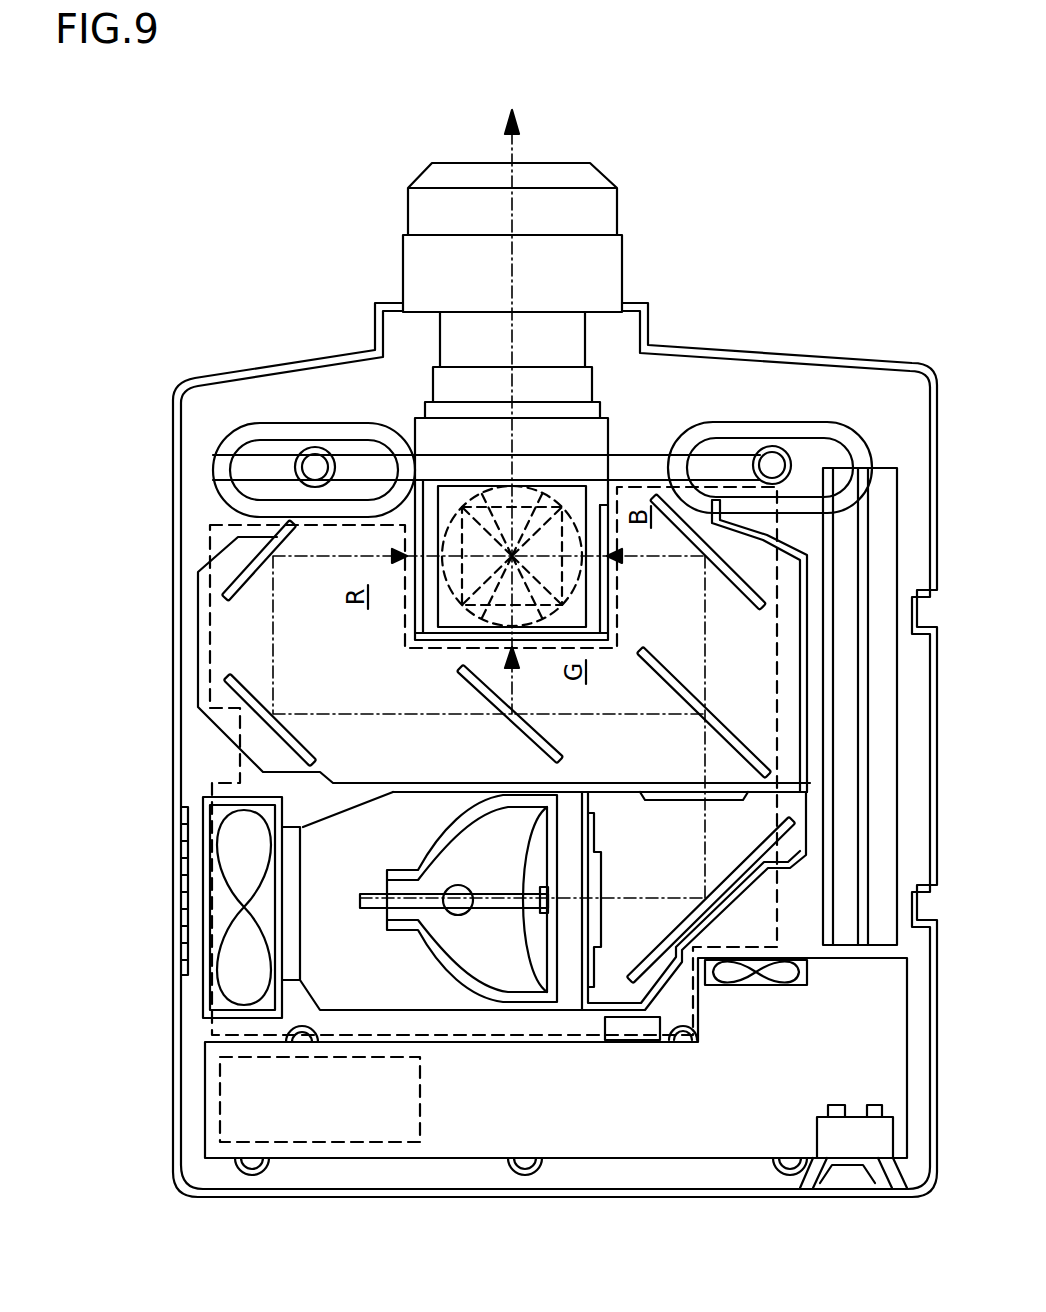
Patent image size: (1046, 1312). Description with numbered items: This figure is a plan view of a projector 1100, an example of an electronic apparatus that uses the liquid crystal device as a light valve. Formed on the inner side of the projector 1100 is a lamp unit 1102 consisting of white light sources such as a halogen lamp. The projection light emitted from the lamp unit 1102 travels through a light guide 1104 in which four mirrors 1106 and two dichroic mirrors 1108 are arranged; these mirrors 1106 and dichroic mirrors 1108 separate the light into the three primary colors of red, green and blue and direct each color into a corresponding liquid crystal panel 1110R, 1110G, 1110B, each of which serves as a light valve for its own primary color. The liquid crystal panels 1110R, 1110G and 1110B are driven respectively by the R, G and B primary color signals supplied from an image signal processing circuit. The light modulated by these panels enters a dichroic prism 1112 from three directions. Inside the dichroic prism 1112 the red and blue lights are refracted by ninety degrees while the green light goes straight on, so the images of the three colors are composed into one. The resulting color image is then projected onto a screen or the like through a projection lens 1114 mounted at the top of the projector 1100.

The projector 1100 is at (180, 358).
The lamp unit 1102 is at (340, 847).
The light guide 1104 is at (192, 698).
The mirror 1106 is at (248, 587).
The dichroic mirror 1108 is at (668, 683).
The liquid crystal panel 1110R is at (417, 600).
The liquid crystal panel 1110G is at (487, 640).
The liquid crystal panel 1110B is at (603, 600).
The dichroic prism 1112 is at (592, 480).
The projection lens 1114 is at (417, 200).